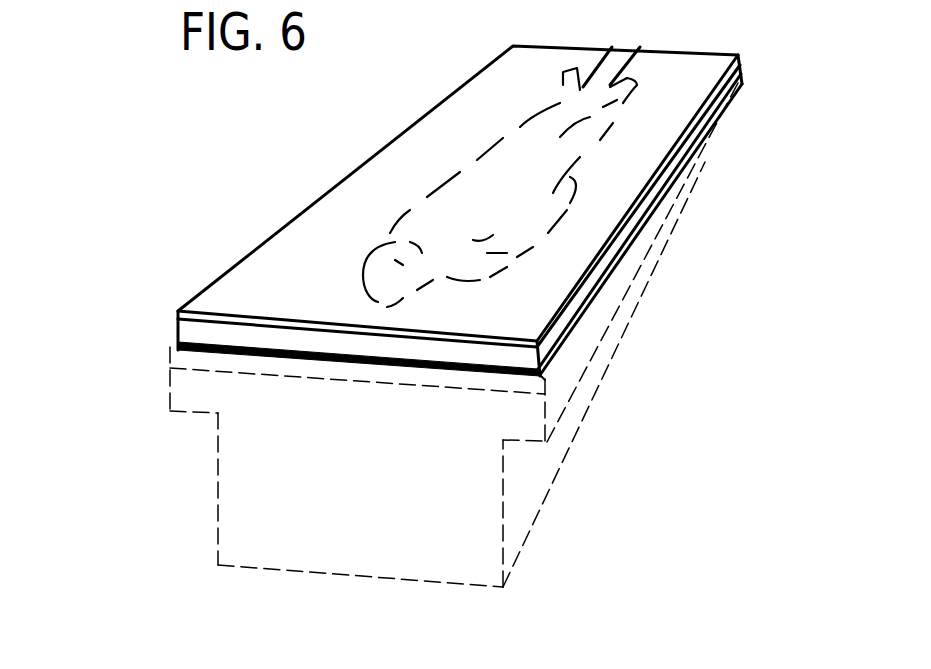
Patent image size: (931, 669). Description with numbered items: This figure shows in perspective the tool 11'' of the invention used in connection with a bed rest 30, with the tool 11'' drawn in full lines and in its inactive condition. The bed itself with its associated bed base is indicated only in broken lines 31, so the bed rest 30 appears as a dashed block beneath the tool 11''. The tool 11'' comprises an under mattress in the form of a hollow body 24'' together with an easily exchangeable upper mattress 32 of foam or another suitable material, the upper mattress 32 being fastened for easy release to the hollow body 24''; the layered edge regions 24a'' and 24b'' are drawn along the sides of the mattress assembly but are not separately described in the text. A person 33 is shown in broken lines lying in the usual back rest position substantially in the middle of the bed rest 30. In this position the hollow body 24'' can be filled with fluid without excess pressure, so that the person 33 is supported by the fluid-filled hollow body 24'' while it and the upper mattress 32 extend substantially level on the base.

The tool 11'' is at (436, 208).
The upper mattress 32 is at (427, 130).
The upper pad layer 24a'' is at (459, 206).
The intermediate pad layer 24b'' is at (679, 221).
The hollow body 24'' is at (397, 215).
The person 33 is at (505, 252).
The bed rest 30 is at (211, 428).
The broken lines 31 is at (227, 355).